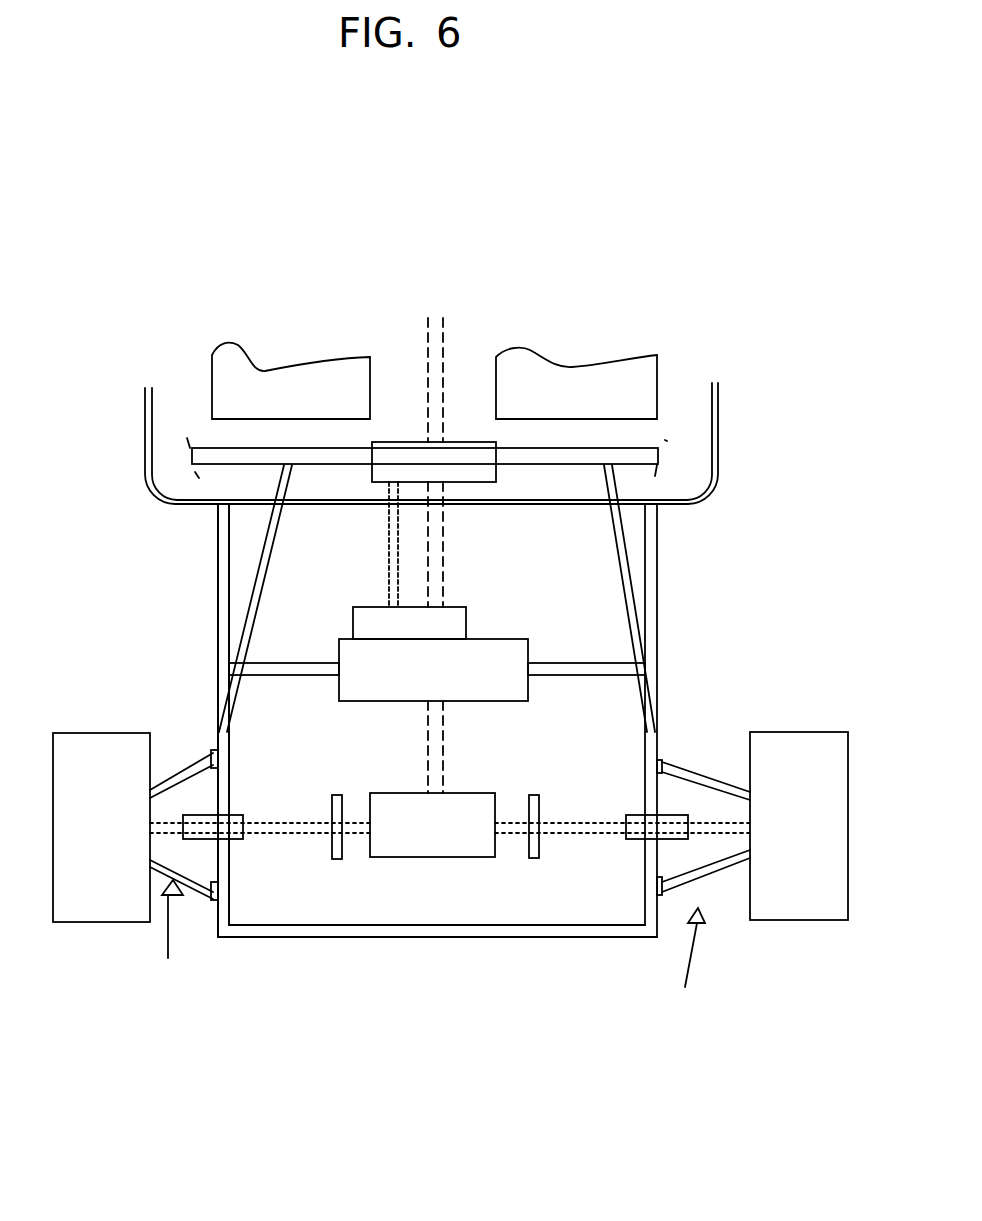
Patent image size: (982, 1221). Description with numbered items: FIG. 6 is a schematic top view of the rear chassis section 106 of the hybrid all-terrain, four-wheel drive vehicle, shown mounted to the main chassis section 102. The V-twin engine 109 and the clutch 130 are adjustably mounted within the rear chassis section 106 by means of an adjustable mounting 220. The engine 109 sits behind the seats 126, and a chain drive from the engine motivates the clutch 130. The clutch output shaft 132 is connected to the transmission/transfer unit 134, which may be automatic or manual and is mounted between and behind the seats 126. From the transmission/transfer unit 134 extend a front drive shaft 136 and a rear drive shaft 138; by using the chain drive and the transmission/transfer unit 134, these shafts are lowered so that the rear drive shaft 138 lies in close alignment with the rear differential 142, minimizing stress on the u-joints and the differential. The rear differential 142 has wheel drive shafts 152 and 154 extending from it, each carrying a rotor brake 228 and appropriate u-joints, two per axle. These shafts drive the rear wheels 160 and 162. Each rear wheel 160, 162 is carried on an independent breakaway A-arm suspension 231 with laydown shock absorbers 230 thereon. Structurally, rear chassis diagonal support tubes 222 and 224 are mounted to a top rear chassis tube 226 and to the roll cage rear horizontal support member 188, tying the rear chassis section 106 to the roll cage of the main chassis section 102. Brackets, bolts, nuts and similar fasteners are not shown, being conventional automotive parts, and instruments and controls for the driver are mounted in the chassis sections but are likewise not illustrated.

The main chassis section 102 is at (150, 495).
The rear chassis section 106 is at (312, 953).
The V-twin engine 109 is at (530, 693).
The seats 126 is at (278, 365).
The clutch 130 is at (467, 623).
The clutch output shaft 132 is at (387, 522).
The transmission/transfer unit 134 is at (463, 440).
The front drive shaft 136 is at (445, 336).
The rear drive shaft 138 is at (440, 580).
The rear differential 142 is at (385, 859).
The wheel drive axle shaft 152 is at (305, 822).
The wheel drive axle shaft 154 is at (558, 823).
The wheel 160 is at (105, 733).
The wheel 162 is at (812, 920).
The roll cage rear horizontal support member 188 is at (617, 447).
The adjustable mounting 220 is at (317, 678).
The rear chassis diagonal support tube 222 is at (270, 555).
The rear chassis diagonal support tube 224 is at (612, 532).
The top rear chassis tube 226 is at (218, 577).
The rotor brakes 228 is at (330, 842).
The laydown shock absorbers 230 is at (235, 840).
The independent breakaway A-arm suspension 231 is at (428, 951).